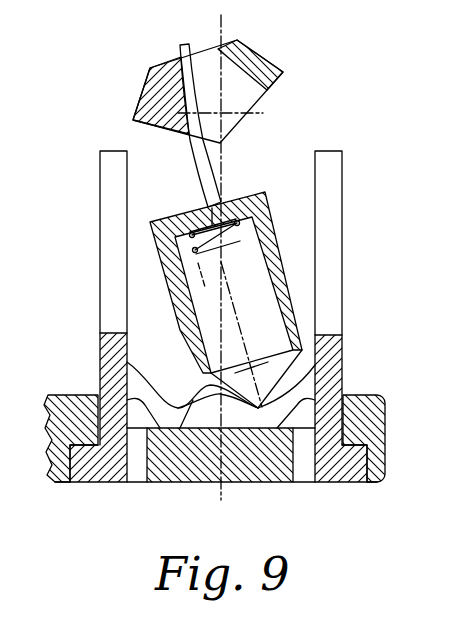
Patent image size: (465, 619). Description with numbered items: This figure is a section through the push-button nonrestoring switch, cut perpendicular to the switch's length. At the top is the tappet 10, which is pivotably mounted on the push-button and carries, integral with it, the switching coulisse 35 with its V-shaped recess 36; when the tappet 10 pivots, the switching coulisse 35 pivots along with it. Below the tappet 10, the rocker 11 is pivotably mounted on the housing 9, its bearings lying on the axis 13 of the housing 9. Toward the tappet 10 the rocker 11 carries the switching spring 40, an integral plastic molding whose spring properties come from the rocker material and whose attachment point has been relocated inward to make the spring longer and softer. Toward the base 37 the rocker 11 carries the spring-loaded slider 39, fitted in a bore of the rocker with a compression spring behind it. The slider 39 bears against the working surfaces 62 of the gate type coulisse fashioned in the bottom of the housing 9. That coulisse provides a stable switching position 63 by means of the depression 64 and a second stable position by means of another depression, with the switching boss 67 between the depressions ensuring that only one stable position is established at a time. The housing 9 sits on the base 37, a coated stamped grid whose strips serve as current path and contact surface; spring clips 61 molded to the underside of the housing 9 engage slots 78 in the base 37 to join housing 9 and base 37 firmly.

The housing 9 is at (343, 308).
The tappet 10 is at (273, 123).
The rocker 11 is at (283, 255).
The axis of housing 13 is at (258, 410).
The switching coulisse 35 is at (267, 53).
The V-shaped recess 36 is at (240, 97).
The base 37 is at (30, 403).
The slider 39 is at (343, 377).
The switching spring 40 is at (132, 179).
The spring clips 61 is at (103, 460).
The working surfaces 62 is at (140, 367).
The stable switching position 63 is at (296, 415).
The depression 64 is at (262, 415).
The switching boss 67 is at (177, 440).
The slots 78 is at (77, 472).